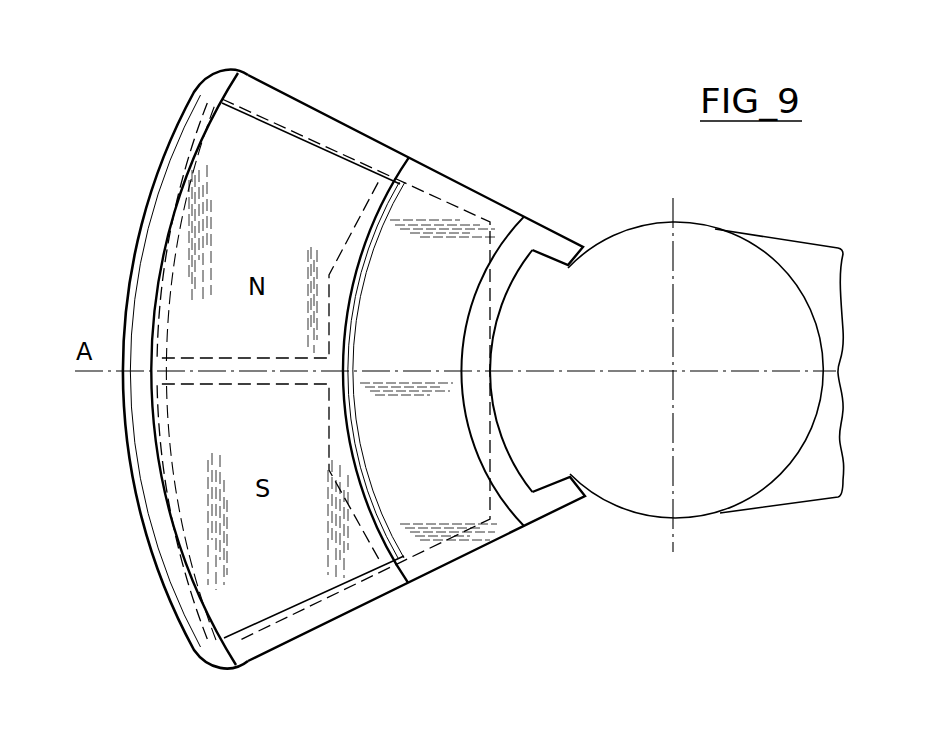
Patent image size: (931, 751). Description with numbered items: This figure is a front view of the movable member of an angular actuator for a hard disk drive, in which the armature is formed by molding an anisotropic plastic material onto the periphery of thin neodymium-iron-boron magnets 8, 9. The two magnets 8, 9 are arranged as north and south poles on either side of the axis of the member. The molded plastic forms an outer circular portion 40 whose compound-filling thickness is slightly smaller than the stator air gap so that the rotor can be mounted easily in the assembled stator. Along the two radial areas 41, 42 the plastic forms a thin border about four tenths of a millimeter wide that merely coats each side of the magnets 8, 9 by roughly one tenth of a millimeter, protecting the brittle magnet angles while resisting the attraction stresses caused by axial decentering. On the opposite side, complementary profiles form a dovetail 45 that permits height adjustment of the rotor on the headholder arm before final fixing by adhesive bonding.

The outer circular portion 40 is at (152, 198).
The radial area (border) 41 is at (335, 128).
The radial area (border) 42 is at (347, 600).
The dovetail 45 is at (535, 278).
The magnet 9 is at (270, 218).
The magnet 8 is at (268, 438).